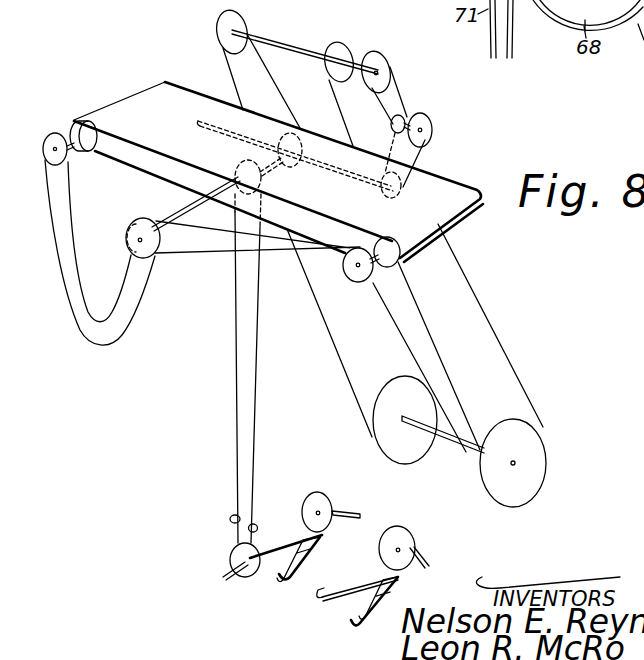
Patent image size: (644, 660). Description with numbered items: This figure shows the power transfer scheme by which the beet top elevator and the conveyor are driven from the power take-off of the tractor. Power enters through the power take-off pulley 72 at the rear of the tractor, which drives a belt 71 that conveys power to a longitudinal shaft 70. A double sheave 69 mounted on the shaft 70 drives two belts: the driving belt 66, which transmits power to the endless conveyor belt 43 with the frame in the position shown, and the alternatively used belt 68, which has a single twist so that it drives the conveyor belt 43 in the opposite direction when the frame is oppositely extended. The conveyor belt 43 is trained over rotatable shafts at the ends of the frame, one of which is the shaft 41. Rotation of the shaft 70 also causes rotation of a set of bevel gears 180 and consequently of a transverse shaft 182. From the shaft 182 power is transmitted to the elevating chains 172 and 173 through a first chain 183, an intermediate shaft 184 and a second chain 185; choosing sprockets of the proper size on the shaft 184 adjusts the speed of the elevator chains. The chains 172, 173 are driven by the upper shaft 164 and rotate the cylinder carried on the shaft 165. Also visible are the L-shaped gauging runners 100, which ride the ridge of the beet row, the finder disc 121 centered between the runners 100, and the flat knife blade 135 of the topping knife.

The rotatable shaft 41 is at (382, 243).
The endless conveyor belt 43 is at (192, 103).
The driving belt 66 is at (72, 275).
The alternatively used belt 68 is at (283, 250).
The double sheave 69 is at (134, 225).
The longitudinal shaft 70 is at (190, 211).
The belt 71 is at (250, 456).
The power take-off pulley 72 is at (232, 558).
The gauging runners 100 is at (324, 571).
The finder disc 121 is at (320, 492).
The knife blade 135 is at (342, 512).
The upper shaft 164 is at (288, 46).
The shaft 165 is at (445, 437).
The conveyor chain 172 is at (337, 356).
The conveyor chain 173 is at (482, 308).
The bevel gears 180 is at (303, 139).
The transverse shaft 182 is at (329, 164).
The first chain 183 is at (421, 147).
The intermediate shaft 184 is at (432, 130).
The second chain 185 is at (400, 90).